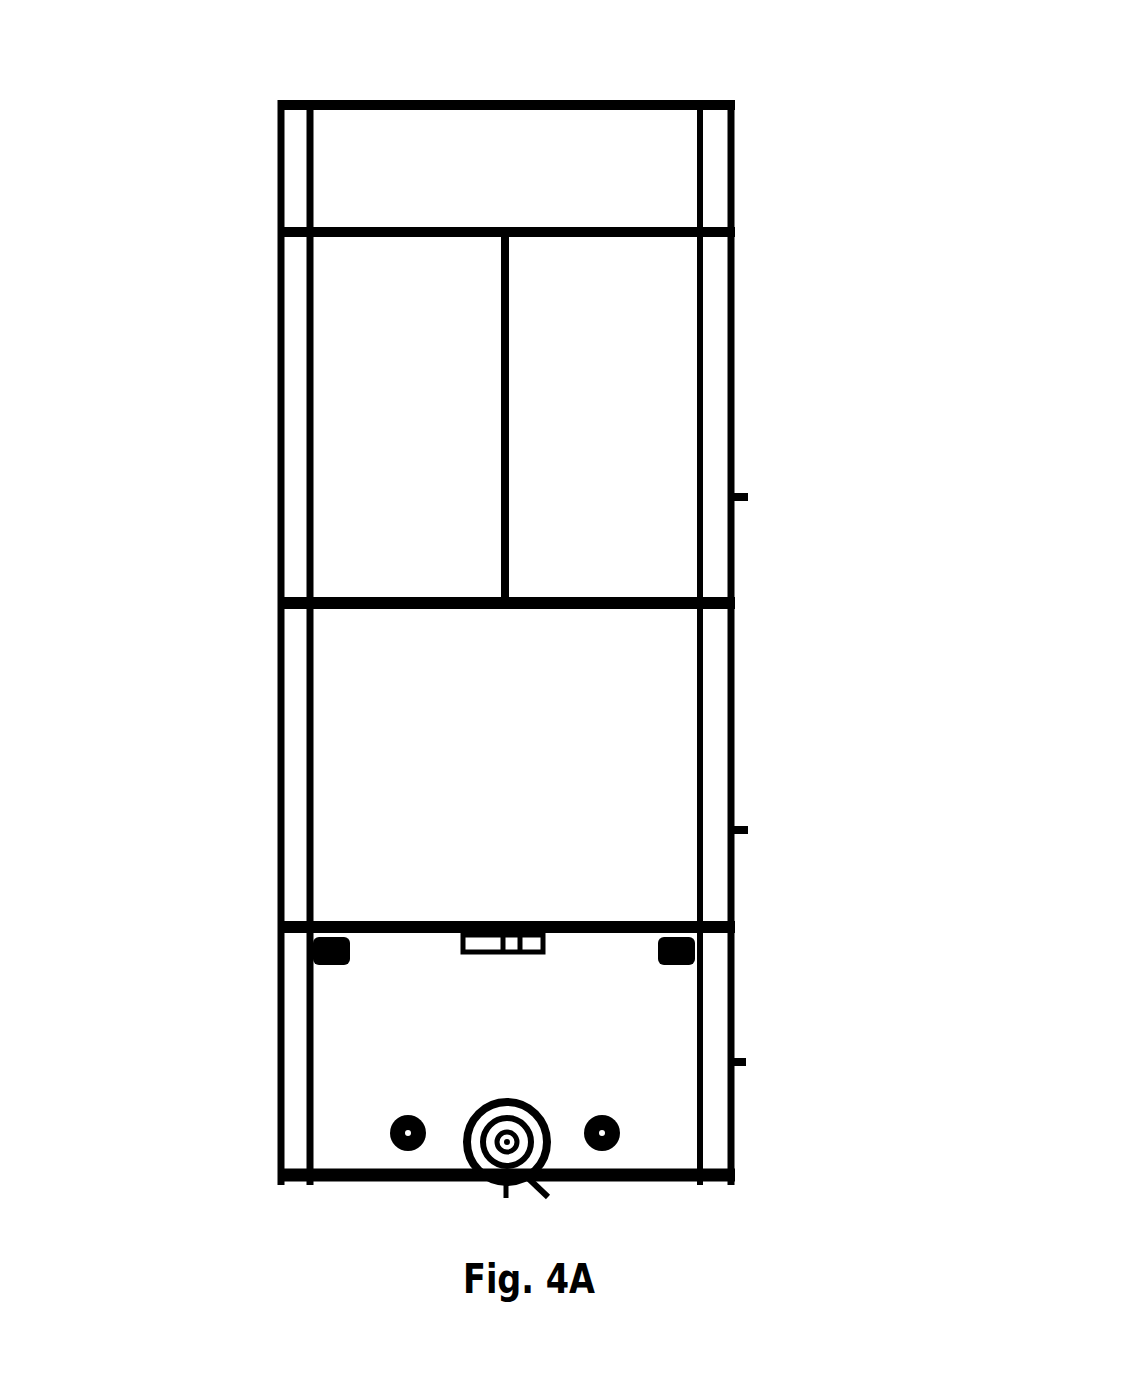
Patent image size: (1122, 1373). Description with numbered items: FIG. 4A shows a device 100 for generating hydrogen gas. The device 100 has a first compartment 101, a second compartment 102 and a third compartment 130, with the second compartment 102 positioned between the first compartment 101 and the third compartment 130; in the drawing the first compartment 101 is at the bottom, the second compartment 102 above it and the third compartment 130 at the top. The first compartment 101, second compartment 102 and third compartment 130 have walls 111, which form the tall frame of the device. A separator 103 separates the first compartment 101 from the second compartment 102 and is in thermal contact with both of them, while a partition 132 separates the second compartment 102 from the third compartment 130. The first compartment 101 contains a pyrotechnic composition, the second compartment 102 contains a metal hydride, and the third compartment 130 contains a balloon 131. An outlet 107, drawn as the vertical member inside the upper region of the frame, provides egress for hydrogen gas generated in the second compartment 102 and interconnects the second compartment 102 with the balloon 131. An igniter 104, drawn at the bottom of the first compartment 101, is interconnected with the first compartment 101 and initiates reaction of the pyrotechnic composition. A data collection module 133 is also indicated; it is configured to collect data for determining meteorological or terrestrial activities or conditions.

The device 100 is at (476, 637).
The first compartment 101 is at (627, 1037).
The second compartment 102 is at (567, 762).
The separator 103 is at (280, 930).
The igniter 104 is at (547, 1147).
The outlet 107 is at (515, 395).
The walls 111 is at (280, 425).
The third compartment 130 is at (650, 150).
The balloon 131 is at (675, 185).
The partition 132 is at (735, 233).
The data collection module 133 is at (628, 460).